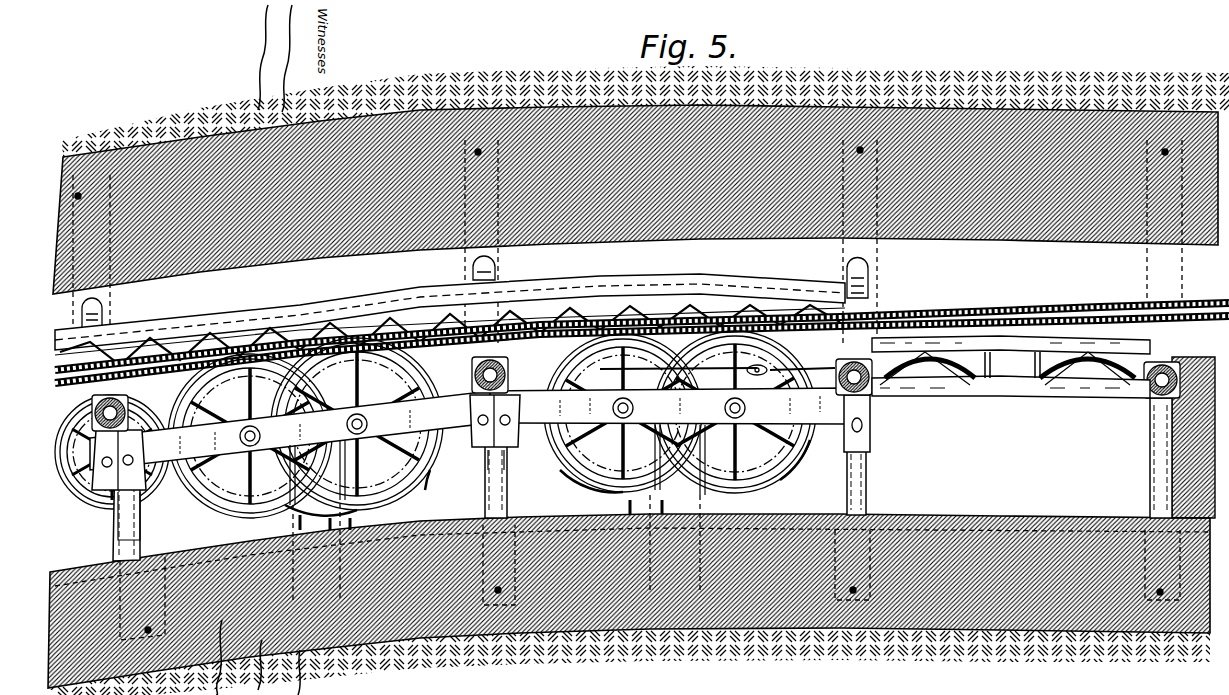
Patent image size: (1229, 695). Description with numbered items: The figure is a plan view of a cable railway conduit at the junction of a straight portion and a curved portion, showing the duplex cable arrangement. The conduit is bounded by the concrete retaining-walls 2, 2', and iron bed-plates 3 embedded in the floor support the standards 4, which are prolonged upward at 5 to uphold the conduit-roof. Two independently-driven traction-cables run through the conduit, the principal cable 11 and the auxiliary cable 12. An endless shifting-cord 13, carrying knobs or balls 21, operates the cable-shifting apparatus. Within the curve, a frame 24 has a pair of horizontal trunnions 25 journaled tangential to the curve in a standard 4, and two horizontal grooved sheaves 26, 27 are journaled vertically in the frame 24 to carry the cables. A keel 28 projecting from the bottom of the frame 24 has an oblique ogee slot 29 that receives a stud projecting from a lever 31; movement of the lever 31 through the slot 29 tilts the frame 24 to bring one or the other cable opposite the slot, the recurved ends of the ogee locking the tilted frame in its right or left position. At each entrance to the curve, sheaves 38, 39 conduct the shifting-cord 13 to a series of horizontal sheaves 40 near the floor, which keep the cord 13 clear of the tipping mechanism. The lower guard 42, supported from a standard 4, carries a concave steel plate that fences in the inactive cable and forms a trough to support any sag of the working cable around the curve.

The concrete retaining-wall 2 is at (635, 225).
The concrete retaining-wall 2' is at (629, 591).
The iron bed-plate 3 is at (142, 509).
The standard 4 is at (118, 524).
The upward prolongation of standard 5 is at (1146, 392).
The principal cable 11 is at (172, 358).
The auxiliary cable 12 is at (1122, 303).
The shifting-cord 13 is at (380, 374).
The knob or ball 21 is at (717, 362).
The frame 24 is at (467, 429).
The horizontal trunnion 25 is at (95, 478).
The horizontal grooved sheave 26 is at (452, 485).
The horizontal grooved sheave 27 is at (238, 505).
The keel 28 is at (507, 462).
The ogee slot 29 is at (497, 465).
The lever 31 is at (240, 380).
The sheave 38 is at (1070, 378).
The sheave 39 is at (905, 385).
The horizontal sheave 40 is at (148, 492).
The lower guard 42 is at (296, 306).